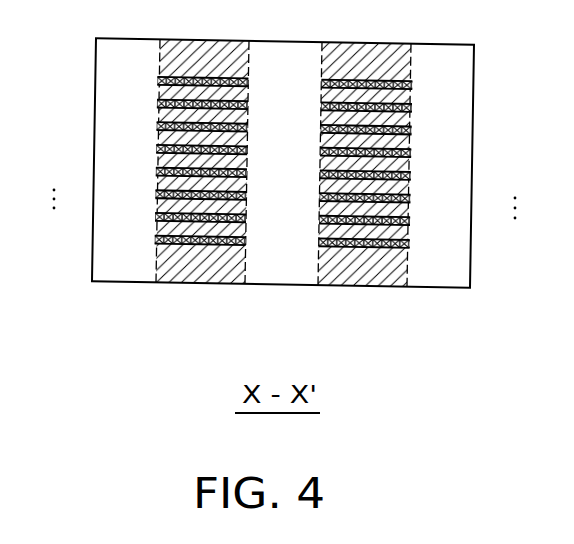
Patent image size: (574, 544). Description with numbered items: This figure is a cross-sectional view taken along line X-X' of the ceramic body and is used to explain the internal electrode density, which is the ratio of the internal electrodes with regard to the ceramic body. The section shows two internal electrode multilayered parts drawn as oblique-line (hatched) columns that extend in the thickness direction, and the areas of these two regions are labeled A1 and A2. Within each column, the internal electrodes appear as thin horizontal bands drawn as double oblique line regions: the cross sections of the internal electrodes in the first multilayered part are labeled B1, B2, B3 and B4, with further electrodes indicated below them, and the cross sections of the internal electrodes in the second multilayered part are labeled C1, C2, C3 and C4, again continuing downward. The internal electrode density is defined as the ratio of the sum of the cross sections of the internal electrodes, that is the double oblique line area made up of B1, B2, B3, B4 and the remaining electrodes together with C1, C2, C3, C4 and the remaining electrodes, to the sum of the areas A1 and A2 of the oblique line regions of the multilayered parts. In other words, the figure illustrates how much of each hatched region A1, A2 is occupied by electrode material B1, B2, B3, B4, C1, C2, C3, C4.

The area of first internal electrode multilayered part region A1 is at (200, 260).
The area of second internal electrode multilayered part region A2 is at (362, 260).
The internal electrode cross section B1 is at (158, 80).
The internal electrode cross section B2 is at (158, 104).
The internal electrode cross section B3 is at (158, 128).
The internal electrode cross section B4 is at (158, 153).
The internal electrode cross section C1 is at (412, 83).
The internal electrode cross section C2 is at (412, 108).
The internal electrode cross section C3 is at (412, 133).
The internal electrode cross section C4 is at (412, 155).